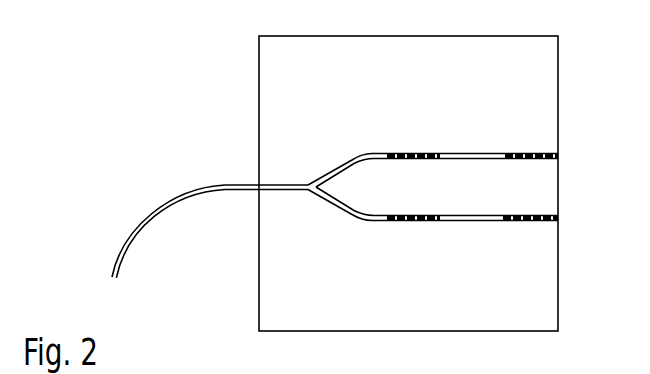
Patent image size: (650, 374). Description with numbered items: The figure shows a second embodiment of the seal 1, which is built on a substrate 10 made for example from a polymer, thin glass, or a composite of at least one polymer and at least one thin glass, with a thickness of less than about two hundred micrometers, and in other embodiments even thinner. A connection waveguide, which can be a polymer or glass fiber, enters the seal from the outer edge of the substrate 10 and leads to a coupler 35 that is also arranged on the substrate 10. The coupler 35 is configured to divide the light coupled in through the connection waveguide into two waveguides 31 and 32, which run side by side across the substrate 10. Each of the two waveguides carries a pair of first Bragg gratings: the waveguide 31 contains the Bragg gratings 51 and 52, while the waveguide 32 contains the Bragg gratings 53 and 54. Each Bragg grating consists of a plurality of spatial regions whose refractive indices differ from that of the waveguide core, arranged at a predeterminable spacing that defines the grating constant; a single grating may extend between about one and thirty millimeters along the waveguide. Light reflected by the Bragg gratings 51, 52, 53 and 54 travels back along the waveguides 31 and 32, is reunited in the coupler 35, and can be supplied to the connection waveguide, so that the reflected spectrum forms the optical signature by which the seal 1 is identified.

The seal 1 is at (172, 58).
The substrate 10 is at (545, 309).
The waveguide 31 is at (558, 156).
The waveguide 32 is at (558, 219).
The coupler 35 is at (305, 182).
The first Bragg grating 51 is at (410, 152).
The first Bragg grating 52 is at (514, 152).
The first Bragg grating 53 is at (411, 223).
The first Bragg grating 54 is at (536, 223).